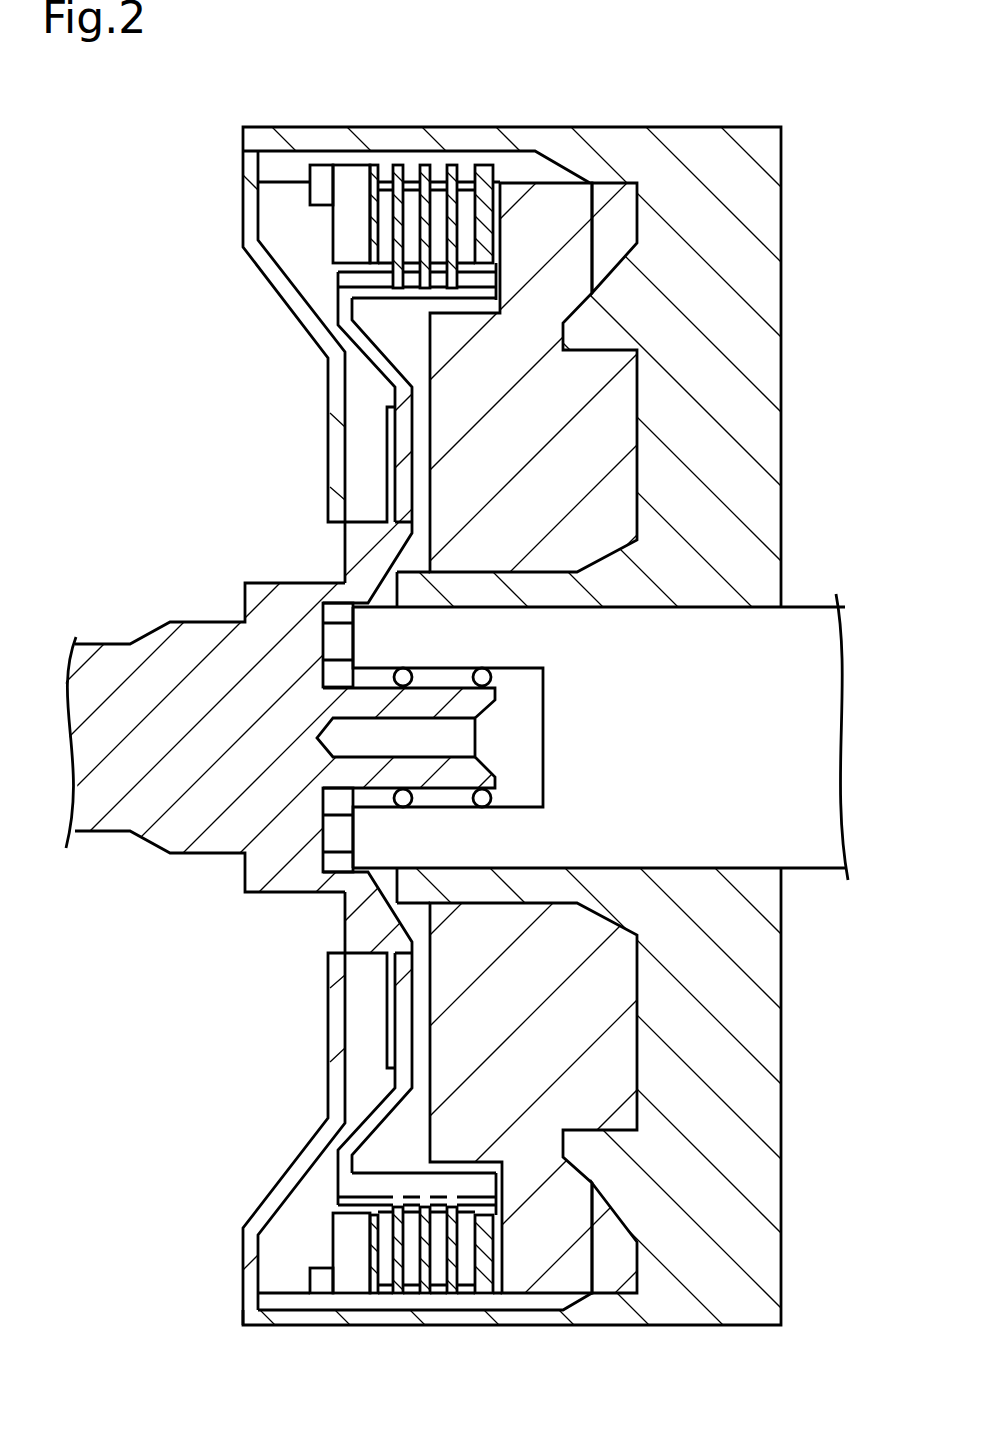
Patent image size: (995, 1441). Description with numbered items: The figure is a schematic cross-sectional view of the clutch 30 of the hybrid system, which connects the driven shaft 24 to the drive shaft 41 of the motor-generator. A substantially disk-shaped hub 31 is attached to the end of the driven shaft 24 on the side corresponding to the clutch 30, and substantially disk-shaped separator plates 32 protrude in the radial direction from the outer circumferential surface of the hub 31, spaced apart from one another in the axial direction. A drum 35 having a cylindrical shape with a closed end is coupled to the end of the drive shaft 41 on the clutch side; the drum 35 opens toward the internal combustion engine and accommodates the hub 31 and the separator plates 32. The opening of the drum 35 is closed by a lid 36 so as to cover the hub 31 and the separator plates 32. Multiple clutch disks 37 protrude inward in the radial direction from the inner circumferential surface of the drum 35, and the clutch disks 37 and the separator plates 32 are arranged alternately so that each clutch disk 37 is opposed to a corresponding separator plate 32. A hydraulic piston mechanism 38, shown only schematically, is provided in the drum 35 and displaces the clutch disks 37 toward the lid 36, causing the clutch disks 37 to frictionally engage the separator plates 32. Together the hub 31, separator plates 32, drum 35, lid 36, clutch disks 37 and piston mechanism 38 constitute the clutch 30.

The driven shaft 24 is at (100, 678).
The clutch 30 is at (247, 100).
The hub 31 is at (355, 550).
The separator plates 32 is at (465, 276).
The drum 35 is at (766, 215).
The lid 36 is at (252, 221).
The clutch disks 37 is at (483, 165).
The hydraulic piston mechanism 38 is at (620, 398).
The drive shaft 41 is at (808, 608).